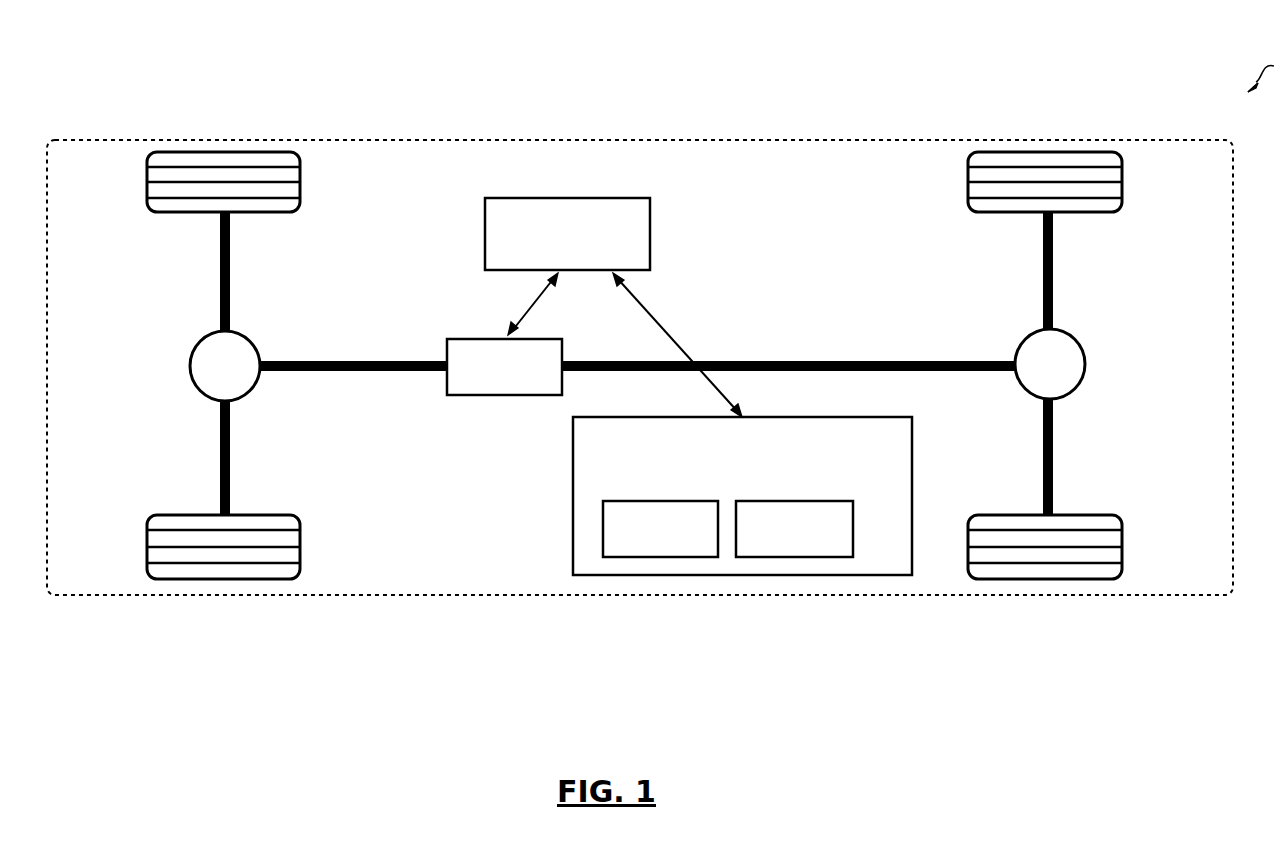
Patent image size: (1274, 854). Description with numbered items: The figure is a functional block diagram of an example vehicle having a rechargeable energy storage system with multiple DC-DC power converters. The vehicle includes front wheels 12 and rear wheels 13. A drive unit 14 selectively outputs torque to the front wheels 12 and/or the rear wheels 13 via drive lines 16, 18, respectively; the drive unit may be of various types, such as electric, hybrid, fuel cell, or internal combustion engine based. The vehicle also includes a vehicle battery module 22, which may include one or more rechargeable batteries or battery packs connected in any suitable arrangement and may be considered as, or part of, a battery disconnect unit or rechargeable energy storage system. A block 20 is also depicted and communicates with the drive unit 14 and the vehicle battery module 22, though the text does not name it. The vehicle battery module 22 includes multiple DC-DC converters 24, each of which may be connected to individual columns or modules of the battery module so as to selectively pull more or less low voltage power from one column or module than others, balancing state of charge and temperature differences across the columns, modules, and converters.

The front wheels 12 is at (1027, 152).
The rear wheels 13 is at (200, 152).
The drive unit 14 is at (457, 395).
The drive line 16 is at (1085, 361).
The drive line 18 is at (197, 384).
The controller 20 is at (565, 198).
The vehicle battery module 22 is at (573, 515).
The DC-DC converters 24 is at (657, 557).